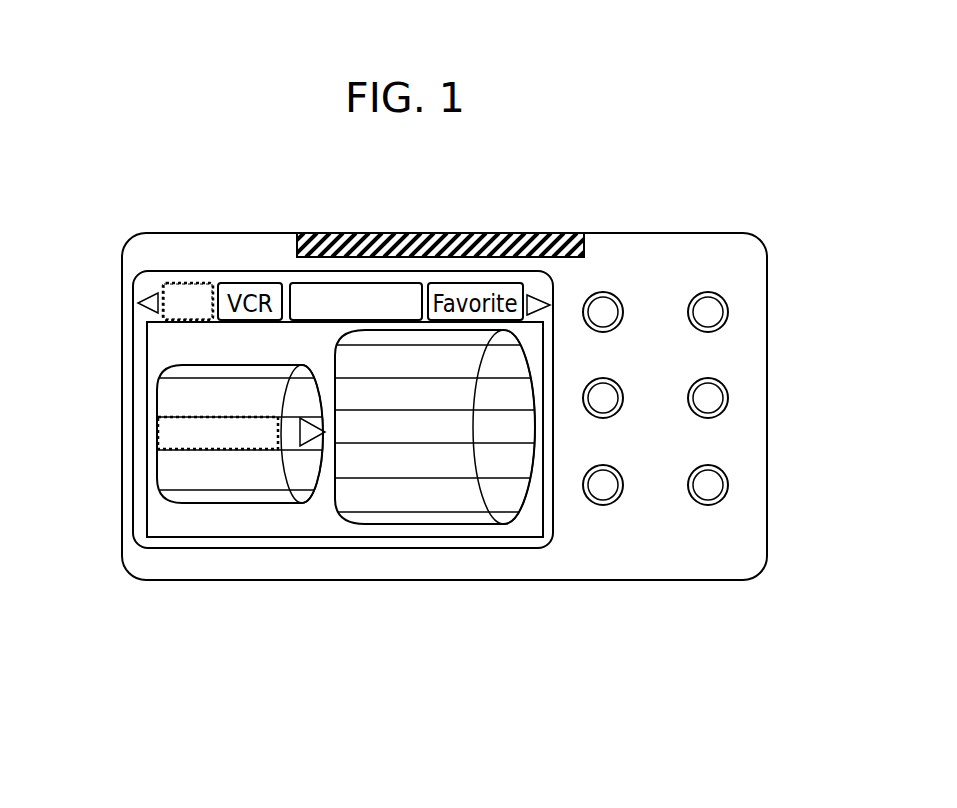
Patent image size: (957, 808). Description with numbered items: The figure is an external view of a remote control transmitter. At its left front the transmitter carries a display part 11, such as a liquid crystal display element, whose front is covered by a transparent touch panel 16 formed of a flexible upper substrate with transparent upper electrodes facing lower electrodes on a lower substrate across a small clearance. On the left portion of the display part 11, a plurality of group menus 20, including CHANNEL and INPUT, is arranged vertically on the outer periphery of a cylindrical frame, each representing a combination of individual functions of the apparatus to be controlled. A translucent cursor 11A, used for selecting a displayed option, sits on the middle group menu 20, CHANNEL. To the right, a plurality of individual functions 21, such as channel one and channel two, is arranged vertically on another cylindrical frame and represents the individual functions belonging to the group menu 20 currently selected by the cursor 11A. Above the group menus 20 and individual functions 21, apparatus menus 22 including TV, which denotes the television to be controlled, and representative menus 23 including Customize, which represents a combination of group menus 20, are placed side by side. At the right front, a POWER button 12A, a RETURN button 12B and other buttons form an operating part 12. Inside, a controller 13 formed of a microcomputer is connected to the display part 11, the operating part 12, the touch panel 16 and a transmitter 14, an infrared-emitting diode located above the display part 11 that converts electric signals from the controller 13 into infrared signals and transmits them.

The display part 11 is at (300, 528).
The translucent cursor 11A is at (163, 320).
The operating part 12 is at (730, 415).
The POWER button 12A is at (622, 477).
The RETURN button 12B is at (749, 501).
The controller 13 is at (592, 558).
The transmitter 14 is at (502, 233).
The transparent touch panel 16 is at (208, 542).
The group menus 20 is at (158, 445).
The individual functions 21 is at (445, 433).
The apparatus menus 22 is at (195, 285).
The representative menus 23 is at (346, 285).